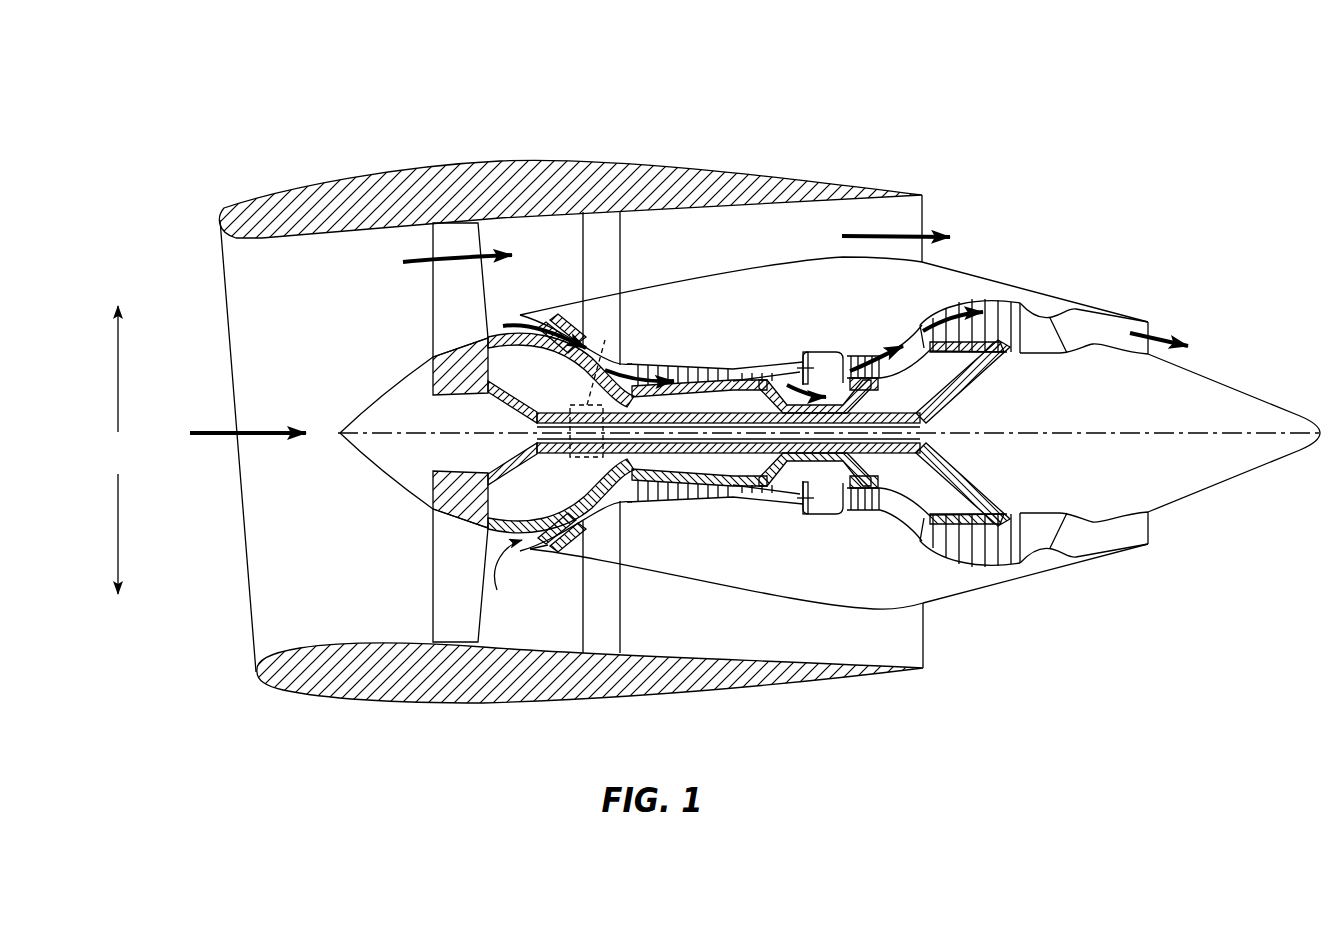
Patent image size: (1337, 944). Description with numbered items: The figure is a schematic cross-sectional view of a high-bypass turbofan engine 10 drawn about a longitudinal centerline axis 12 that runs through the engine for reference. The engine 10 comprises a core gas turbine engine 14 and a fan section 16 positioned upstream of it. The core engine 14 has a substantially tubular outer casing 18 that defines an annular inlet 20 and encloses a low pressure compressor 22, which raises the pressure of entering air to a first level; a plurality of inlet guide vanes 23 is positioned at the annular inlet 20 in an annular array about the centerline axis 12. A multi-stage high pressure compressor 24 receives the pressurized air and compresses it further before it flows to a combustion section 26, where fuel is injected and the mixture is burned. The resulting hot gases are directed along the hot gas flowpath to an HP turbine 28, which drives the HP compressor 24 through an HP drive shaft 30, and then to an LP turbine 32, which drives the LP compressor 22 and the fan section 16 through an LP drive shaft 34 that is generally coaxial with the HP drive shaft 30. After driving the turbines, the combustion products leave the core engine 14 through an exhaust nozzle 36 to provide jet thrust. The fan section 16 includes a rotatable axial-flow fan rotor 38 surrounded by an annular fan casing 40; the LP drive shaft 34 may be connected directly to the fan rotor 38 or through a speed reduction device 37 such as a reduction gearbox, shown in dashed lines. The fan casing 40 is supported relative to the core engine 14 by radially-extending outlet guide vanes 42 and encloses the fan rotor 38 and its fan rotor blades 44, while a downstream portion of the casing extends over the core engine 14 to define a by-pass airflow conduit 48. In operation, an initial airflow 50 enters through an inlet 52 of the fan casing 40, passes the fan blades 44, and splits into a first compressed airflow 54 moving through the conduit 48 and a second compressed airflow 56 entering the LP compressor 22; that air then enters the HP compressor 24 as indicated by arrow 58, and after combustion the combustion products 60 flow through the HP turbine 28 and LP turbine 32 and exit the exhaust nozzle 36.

The turbofan engine 10 is at (950, 128).
The centerline axis 12 is at (1090, 430).
The core gas turbine engine 14 is at (755, 327).
The fan section 16 is at (500, 136).
The outer casing 18 is at (777, 600).
The annular inlet 20 is at (520, 574).
The low pressure compressor 22 is at (575, 503).
The inlet guide vanes 23 is at (550, 546).
The high pressure compressor 24 is at (652, 492).
The combustion section 26 is at (823, 493).
The HP turbine 28 is at (882, 500).
The HP drive shaft 30 is at (836, 368).
The LP turbine 32 is at (1007, 560).
The LP drive shaft 34 is at (576, 415).
The exhaust nozzle 36 is at (1170, 334).
The speed reduction device 37 is at (593, 382).
The fan rotor 38 is at (486, 395).
The fan casing 40 is at (475, 705).
The outlet guide vanes 42 is at (1022, 535).
The fan rotor blades 44 is at (432, 585).
The by-pass airflow conduit 48 is at (722, 256).
The initial airflow 50 is at (262, 432).
The inlet 52 is at (250, 640).
The first compressed airflow 54 is at (447, 256).
The second compressed airflow 56 is at (515, 323).
The airflow entering HP compressor 58 is at (655, 365).
The combustion products 60 is at (865, 370).